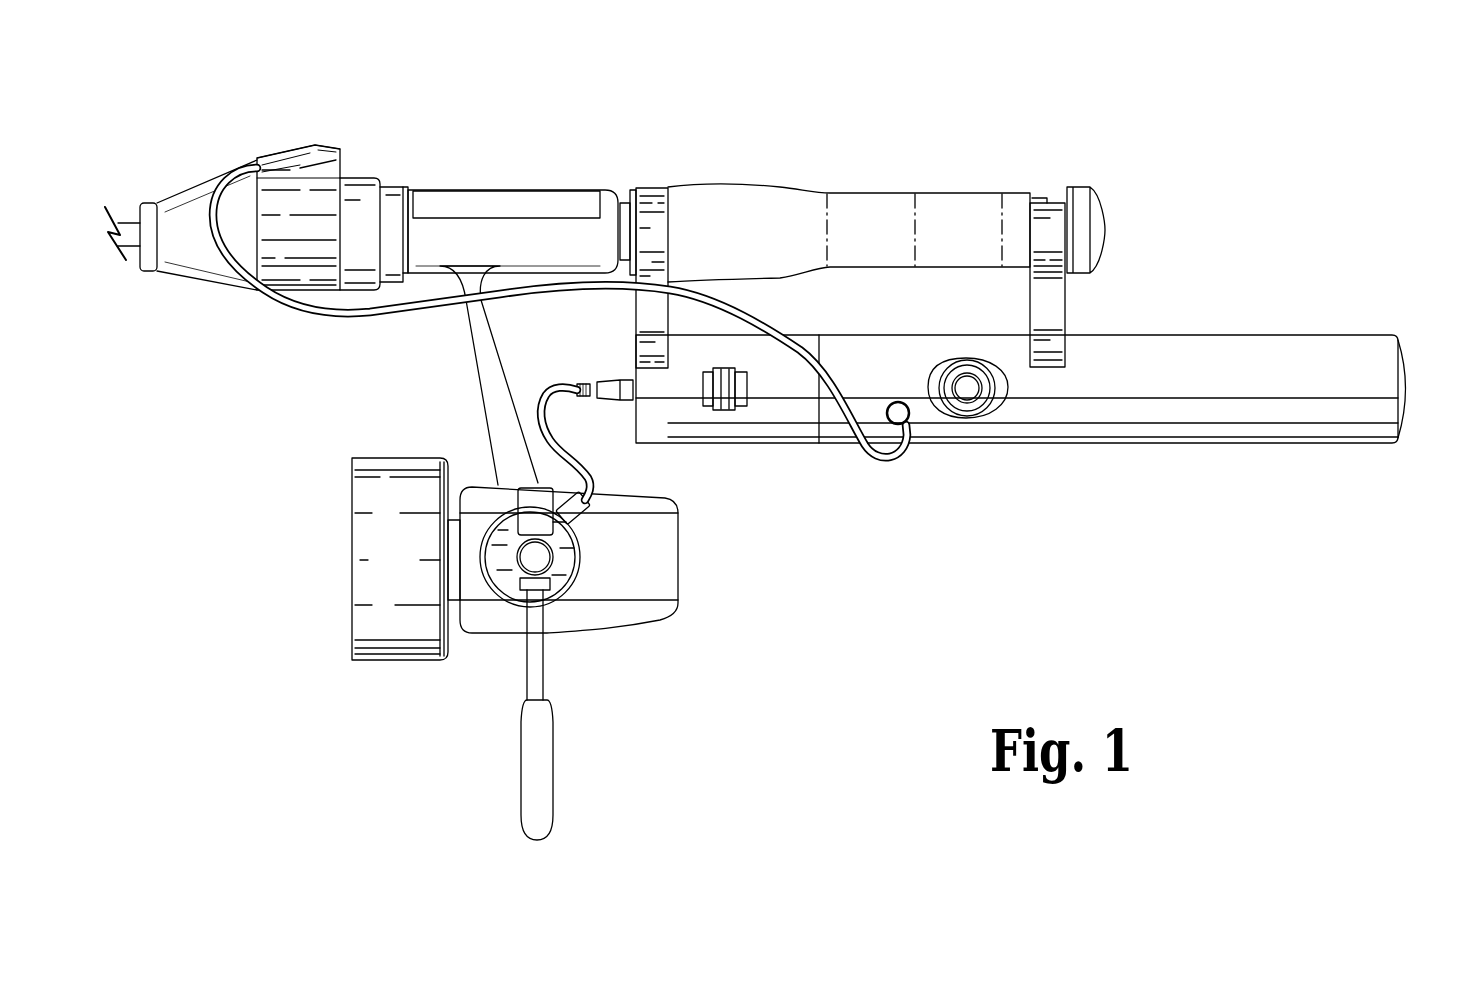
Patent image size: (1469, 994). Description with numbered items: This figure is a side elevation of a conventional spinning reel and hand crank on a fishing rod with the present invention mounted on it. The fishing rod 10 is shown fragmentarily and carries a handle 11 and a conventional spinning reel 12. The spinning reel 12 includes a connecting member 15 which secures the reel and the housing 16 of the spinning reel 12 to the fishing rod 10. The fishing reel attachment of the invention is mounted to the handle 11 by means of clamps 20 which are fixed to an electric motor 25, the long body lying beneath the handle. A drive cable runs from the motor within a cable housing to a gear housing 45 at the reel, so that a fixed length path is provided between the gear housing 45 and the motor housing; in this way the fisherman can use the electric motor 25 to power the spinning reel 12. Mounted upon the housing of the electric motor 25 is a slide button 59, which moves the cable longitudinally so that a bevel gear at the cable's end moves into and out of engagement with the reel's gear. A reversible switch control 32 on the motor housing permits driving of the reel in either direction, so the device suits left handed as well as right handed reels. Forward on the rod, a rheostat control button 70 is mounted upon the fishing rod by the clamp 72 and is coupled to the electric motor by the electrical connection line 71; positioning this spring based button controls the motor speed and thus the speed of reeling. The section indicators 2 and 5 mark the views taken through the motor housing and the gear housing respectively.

The fishing rod 10 is at (125, 228).
The handle 11 is at (767, 197).
The spinning reel 12 is at (445, 649).
The connecting member 15 is at (480, 328).
The housing 16 is at (583, 620).
The clamps 20 is at (648, 207).
The electric motor 25 is at (1283, 462).
The reversible switch control 32 is at (963, 390).
The gear housing 45 is at (567, 557).
The slide button 59 is at (723, 407).
The rheostat control button 70 is at (323, 145).
The electrical connection line 71 is at (537, 297).
The clamp 72 is at (350, 182).
The section line 2- 2 is at (727, 500).
The section line 5- 5 is at (457, 392).